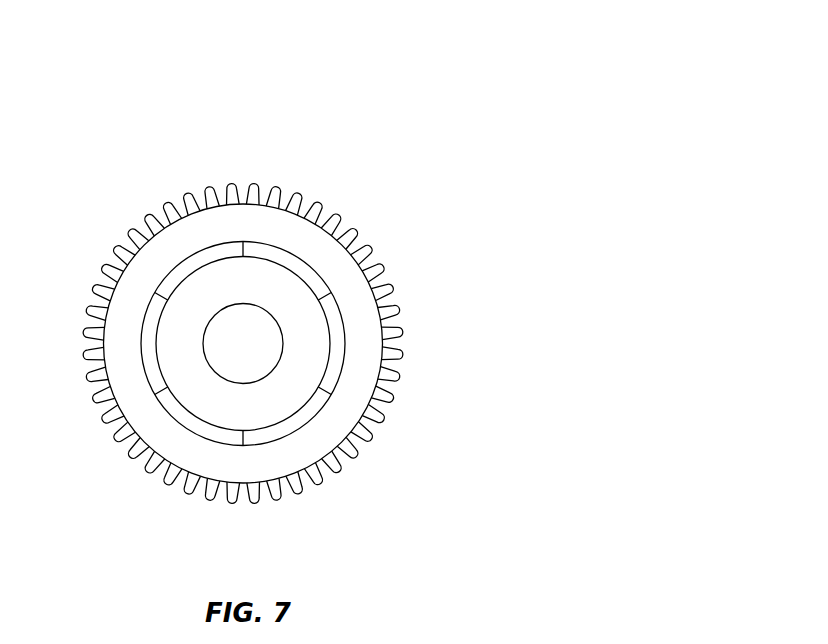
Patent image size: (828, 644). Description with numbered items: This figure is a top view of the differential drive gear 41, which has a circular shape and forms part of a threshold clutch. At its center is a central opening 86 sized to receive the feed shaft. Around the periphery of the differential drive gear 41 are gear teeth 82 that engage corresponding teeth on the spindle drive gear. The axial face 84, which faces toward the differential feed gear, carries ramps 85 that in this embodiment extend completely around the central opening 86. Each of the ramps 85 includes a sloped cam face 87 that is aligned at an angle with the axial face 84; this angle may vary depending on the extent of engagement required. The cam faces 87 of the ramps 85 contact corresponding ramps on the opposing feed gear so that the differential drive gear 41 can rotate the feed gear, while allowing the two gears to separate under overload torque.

The differential drive gear 41 is at (373, 124).
The gear teeth 82 is at (138, 226).
The axial face 84 is at (352, 386).
The ramps 85 is at (142, 348).
The central opening 86 is at (230, 352).
The sloped cam face 87 is at (205, 255).